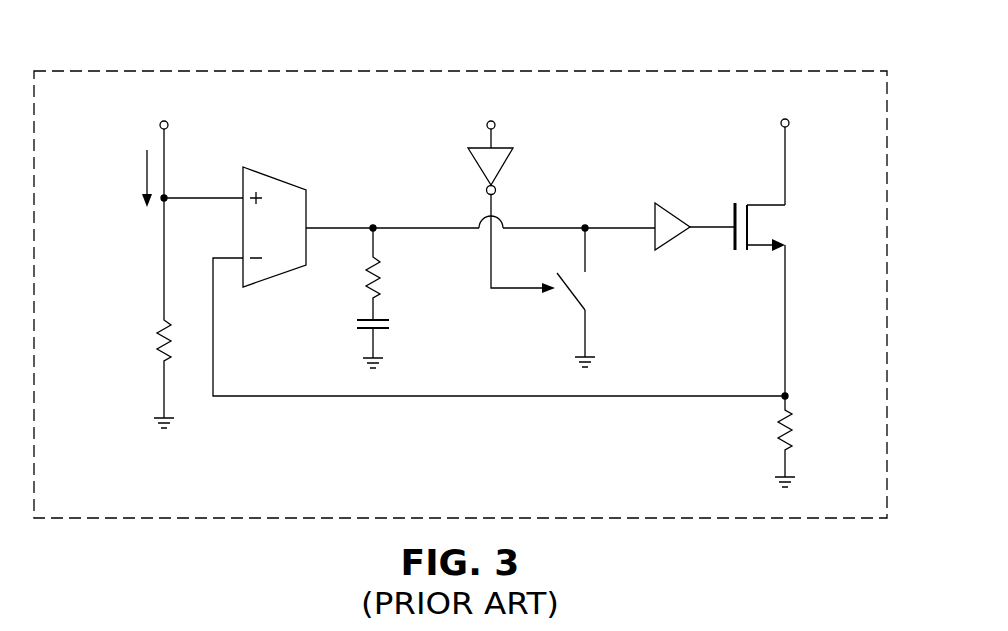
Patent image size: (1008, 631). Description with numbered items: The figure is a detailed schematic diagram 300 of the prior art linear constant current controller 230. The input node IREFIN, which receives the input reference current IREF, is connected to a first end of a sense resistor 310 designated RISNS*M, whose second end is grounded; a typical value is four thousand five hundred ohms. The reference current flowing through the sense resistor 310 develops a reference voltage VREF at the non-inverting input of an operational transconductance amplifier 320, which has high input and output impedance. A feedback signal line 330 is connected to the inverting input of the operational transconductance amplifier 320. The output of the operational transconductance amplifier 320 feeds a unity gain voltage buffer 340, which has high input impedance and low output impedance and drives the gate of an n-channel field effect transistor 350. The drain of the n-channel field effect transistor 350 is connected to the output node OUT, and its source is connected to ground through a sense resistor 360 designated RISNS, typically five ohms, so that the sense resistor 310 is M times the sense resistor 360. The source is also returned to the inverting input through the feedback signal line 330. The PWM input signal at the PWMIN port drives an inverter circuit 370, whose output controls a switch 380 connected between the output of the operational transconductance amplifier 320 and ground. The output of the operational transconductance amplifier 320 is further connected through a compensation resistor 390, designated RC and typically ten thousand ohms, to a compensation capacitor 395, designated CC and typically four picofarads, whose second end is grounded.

The schematic diagram 300 is at (782, 31).
The linear constant current controller 230 is at (605, 71).
The sense resistor 310 is at (158, 346).
The operational transconductance amplifier 320 is at (284, 182).
The feedback signal line 330 is at (251, 398).
The unity gain voltage buffer 340 is at (678, 209).
The n-channel field effect transistor 350 is at (732, 242).
The sense resistor 360 is at (778, 428).
The inverter circuit 370 is at (515, 150).
The switch 380 is at (569, 297).
The compensation resistor 390 is at (367, 281).
The compensation capacitor 395 is at (364, 333).